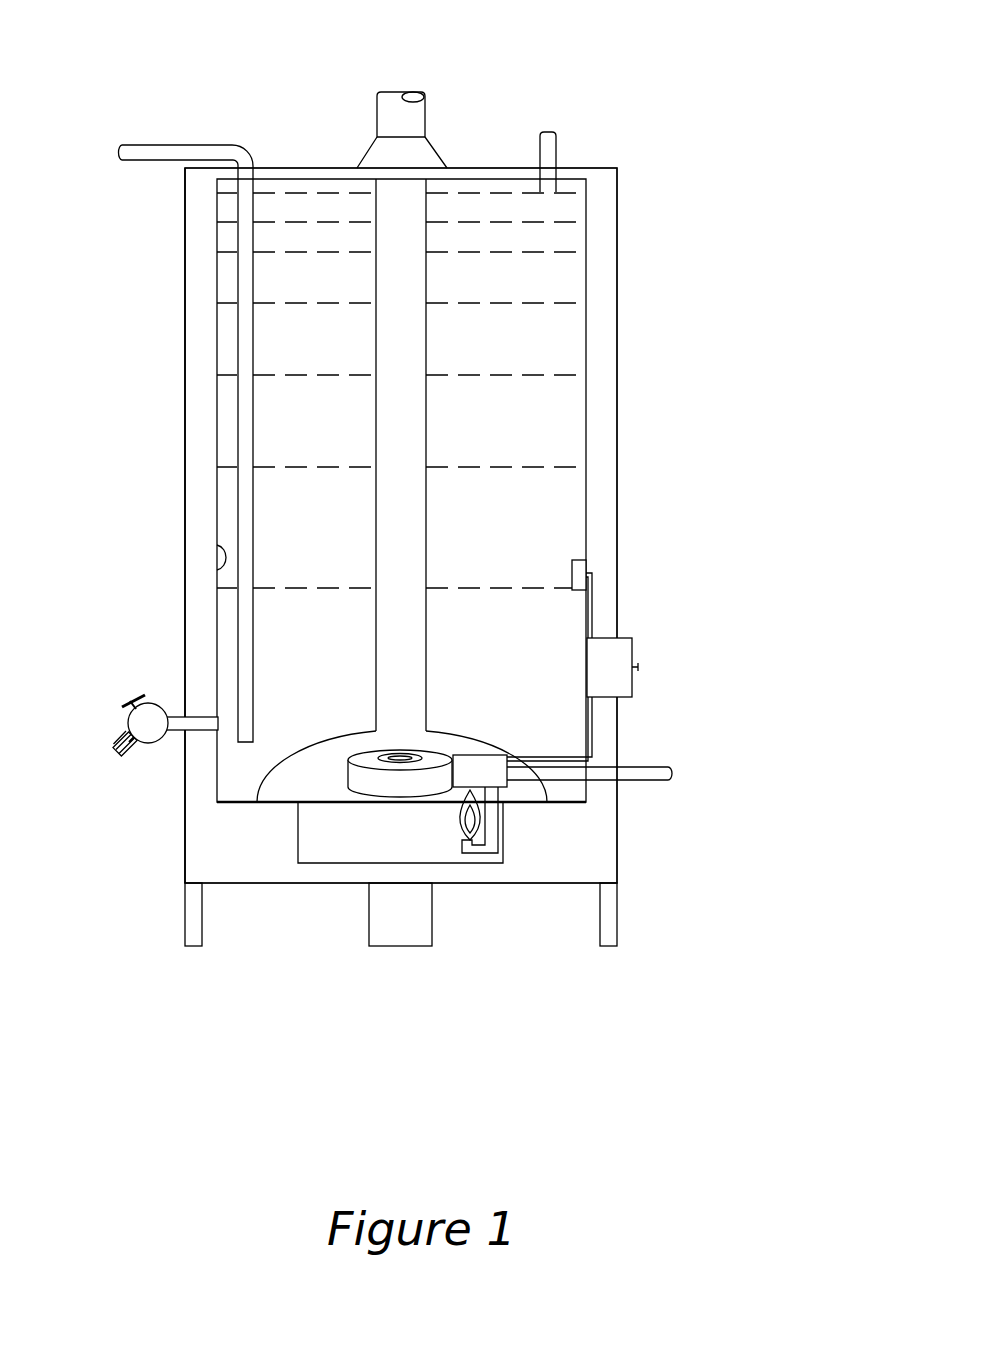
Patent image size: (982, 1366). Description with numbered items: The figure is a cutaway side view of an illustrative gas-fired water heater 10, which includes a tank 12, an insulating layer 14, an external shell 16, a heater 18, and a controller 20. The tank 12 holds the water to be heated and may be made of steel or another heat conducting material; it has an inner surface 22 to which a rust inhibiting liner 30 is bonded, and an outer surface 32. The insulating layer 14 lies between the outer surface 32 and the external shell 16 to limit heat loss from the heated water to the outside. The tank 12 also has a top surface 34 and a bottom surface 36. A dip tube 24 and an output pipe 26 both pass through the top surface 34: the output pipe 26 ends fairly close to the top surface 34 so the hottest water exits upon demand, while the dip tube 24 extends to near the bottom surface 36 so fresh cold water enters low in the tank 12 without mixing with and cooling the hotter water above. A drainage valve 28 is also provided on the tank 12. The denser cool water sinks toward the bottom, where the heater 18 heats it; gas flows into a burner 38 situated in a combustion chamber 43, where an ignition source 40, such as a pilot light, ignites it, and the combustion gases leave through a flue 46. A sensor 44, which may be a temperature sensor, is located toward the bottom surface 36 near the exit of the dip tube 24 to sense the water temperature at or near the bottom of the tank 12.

The water heater 10 is at (503, 72).
The tank 12 is at (220, 418).
The insulating layer 14 is at (203, 275).
The external shell 16 is at (186, 527).
The heater 18 is at (314, 779).
The controller 20 is at (632, 650).
The inner surface 22 is at (220, 565).
The dip tube 24 is at (147, 162).
The output pipe 26 is at (557, 155).
The drainage valve 28 is at (126, 722).
The rust inhibiting liner 30 is at (224, 600).
The outer surface 32 is at (215, 489).
The top surface 34 is at (462, 176).
The bottom surface 36 is at (525, 802).
The burner 38 is at (362, 775).
The ignition source 40 is at (458, 820).
The combustion chamber 43 is at (405, 745).
The sensor 44 is at (580, 568).
The flue 46 is at (383, 117).